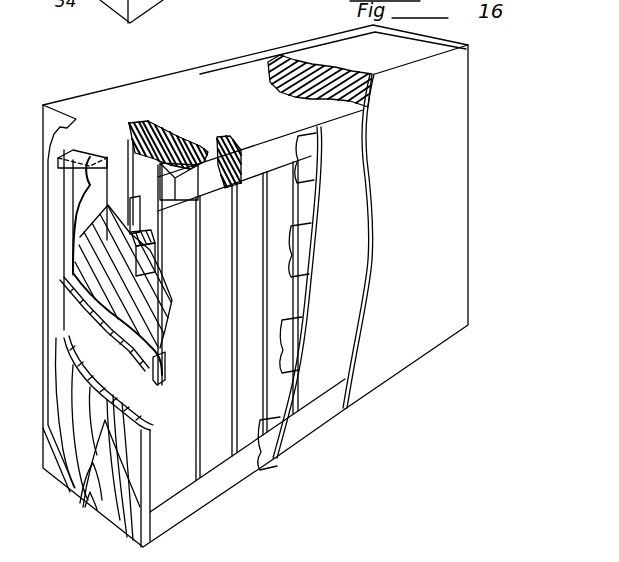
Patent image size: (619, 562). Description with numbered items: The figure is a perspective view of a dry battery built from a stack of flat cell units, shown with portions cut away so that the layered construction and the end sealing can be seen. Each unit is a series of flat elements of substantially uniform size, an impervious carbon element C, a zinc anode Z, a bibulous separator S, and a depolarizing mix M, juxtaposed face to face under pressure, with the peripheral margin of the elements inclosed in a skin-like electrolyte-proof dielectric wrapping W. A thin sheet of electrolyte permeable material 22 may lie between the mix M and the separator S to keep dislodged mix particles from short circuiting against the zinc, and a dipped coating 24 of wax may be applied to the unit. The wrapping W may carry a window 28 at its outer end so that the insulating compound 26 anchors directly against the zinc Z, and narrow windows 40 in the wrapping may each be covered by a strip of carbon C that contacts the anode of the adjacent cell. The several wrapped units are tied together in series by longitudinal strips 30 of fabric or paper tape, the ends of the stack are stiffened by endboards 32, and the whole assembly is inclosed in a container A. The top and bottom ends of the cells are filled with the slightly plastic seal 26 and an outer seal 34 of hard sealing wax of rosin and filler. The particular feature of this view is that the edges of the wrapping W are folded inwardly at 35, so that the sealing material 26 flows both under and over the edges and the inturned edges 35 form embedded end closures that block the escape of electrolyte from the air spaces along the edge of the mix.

The container A is at (458, 130).
The wrapping W is at (73, 212).
The carbon element C is at (135, 236).
The mix M is at (90, 262).
The separator S is at (137, 304).
The anode Z is at (143, 210).
The electrolyte permeable material 22 is at (165, 368).
The dipped coating 24 is at (300, 420).
The insulating compound 26 is at (173, 137).
The window 28 is at (143, 103).
The strips 30 is at (318, 163).
The endboards 32 is at (72, 392).
The outer seal 34 is at (288, 60).
The inwardly folded edges 35 is at (97, 155).
The windows 40 is at (137, 202).